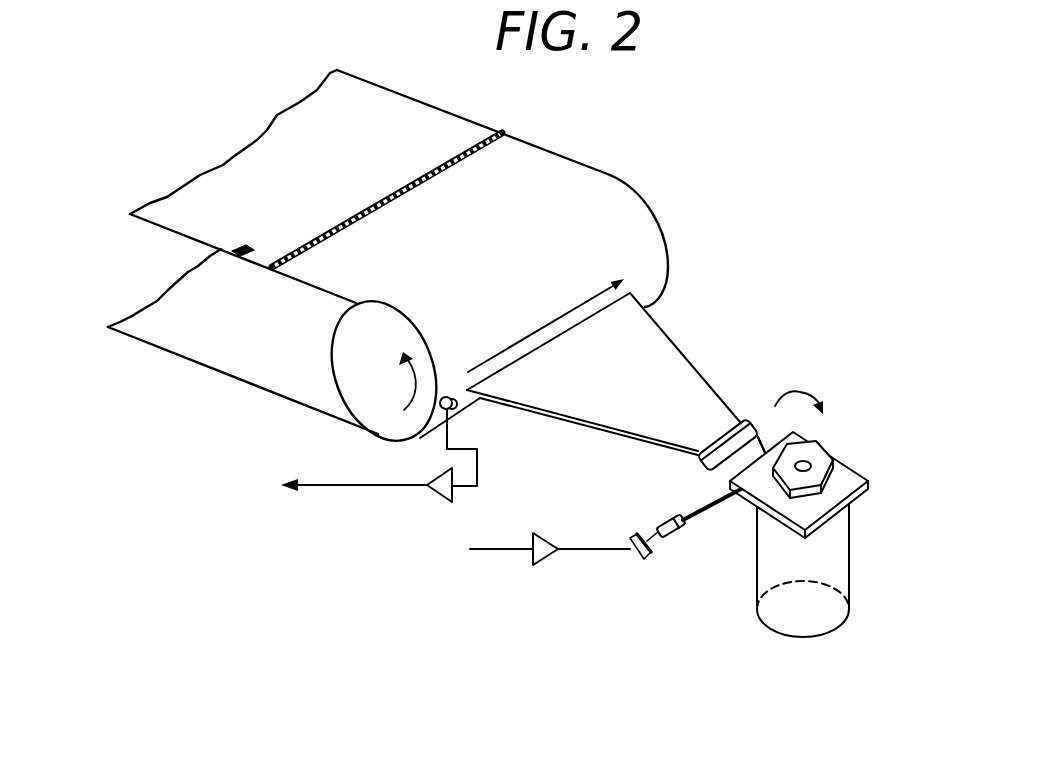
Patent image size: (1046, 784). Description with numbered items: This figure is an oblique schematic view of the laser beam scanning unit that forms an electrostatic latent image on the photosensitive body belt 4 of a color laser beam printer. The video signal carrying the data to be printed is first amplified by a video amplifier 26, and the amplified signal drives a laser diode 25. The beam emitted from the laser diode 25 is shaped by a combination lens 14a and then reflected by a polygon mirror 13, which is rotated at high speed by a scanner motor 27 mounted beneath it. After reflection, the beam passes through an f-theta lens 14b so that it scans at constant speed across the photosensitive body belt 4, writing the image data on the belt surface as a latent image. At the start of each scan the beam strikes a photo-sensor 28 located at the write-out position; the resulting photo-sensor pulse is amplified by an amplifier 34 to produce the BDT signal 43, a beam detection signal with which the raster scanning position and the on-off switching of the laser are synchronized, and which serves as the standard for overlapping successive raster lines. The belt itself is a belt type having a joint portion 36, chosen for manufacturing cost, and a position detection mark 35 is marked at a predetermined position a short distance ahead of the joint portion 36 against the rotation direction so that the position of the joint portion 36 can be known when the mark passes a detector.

The photosensitive body belt 4 is at (605, 180).
The polygon mirror 13 is at (820, 462).
The combination lens 14a is at (677, 537).
The f-theta lens 14b is at (698, 477).
The laser diode 25 is at (638, 561).
The video amplifier 26 is at (543, 563).
The scanner motor 27 is at (768, 613).
The photo-sensor 28 is at (447, 397).
The amplifier 34 is at (440, 496).
The position detection mark 35 is at (242, 244).
The joint portion 36 is at (453, 150).
The BDT signal 43 is at (303, 453).